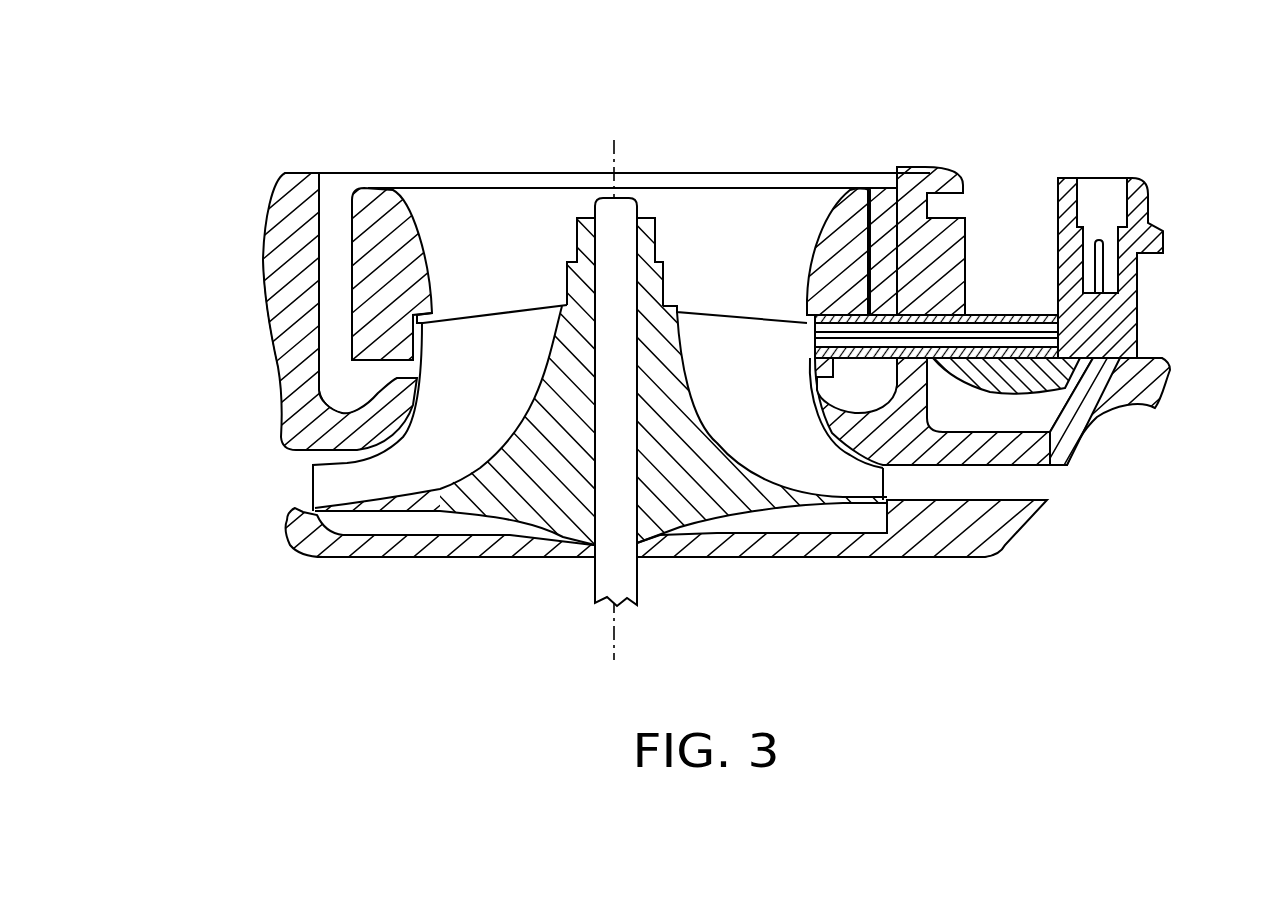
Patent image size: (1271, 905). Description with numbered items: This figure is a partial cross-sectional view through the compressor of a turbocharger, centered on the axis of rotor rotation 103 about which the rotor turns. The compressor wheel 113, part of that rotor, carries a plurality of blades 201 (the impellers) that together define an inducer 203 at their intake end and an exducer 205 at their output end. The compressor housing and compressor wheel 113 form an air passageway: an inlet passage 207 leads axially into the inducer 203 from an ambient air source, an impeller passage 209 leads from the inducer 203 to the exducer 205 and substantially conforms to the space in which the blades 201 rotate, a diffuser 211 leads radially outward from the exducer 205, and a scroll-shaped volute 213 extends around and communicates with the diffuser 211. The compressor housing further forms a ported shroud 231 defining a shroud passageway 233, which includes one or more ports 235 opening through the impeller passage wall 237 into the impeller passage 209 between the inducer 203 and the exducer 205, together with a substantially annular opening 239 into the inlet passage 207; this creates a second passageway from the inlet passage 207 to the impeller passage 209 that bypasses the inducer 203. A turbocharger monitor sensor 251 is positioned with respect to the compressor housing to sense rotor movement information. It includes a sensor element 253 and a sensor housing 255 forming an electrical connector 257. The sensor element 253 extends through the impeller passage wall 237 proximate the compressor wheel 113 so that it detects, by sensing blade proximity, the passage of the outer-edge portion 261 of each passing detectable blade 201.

The axis of rotor rotation 103 is at (613, 630).
The compressor wheel 113 is at (683, 485).
The blades 201 is at (477, 350).
The inducer 203 is at (493, 250).
The exducer 205 is at (890, 483).
The inlet passage 207 is at (697, 250).
The impeller passage 209 is at (787, 437).
The diffuser 211 is at (973, 478).
The volute 213 is at (1107, 428).
The ported shroud 231 is at (368, 227).
The shroud passageway 233 is at (332, 326).
The ports 235 is at (406, 363).
The impeller passage wall 237 is at (385, 447).
The annular opening 239 is at (866, 200).
The sensor 251 is at (1040, 313).
The sensor element 253 is at (988, 337).
The sensor housing 255 is at (1133, 323).
The electrical connector 257 is at (1097, 235).
The outer-edge portion 261 is at (413, 338).